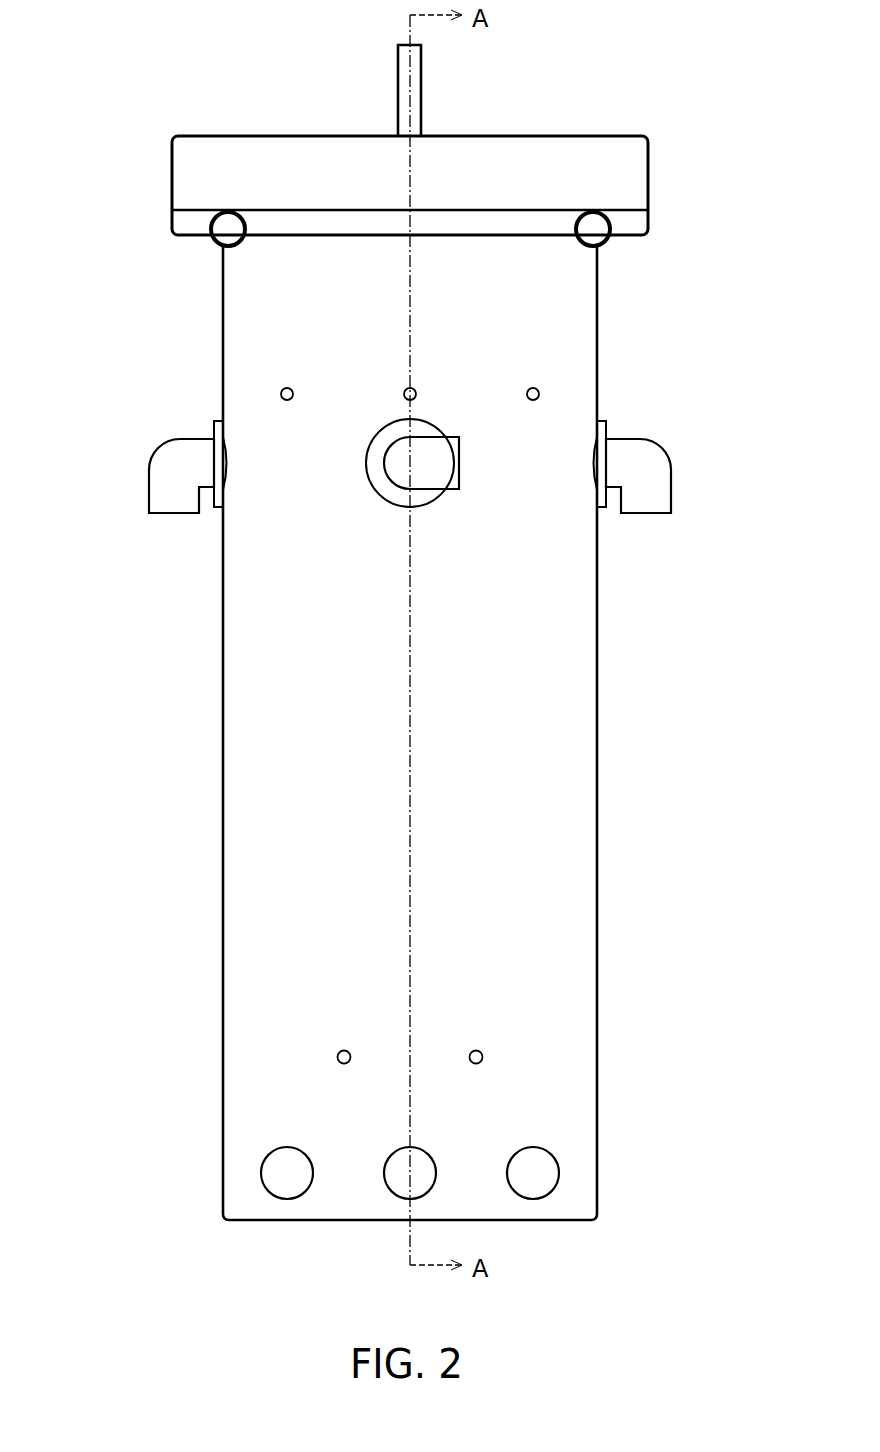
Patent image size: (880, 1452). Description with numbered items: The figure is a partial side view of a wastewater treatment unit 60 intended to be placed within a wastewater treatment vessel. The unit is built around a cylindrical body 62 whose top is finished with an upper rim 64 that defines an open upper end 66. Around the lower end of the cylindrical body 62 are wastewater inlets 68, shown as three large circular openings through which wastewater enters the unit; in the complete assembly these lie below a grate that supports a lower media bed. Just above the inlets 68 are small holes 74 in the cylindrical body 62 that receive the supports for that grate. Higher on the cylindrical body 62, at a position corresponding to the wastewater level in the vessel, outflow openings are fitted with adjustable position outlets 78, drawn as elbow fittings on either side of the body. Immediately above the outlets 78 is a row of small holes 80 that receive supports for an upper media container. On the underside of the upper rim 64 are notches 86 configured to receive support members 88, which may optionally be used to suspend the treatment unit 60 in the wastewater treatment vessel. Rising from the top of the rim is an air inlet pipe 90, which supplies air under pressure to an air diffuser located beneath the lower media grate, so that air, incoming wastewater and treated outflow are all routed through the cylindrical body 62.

The wastewater treatment unit 60 is at (143, 726).
The cylindrical body 62 is at (240, 841).
The upper rim 64 is at (170, 171).
The open upper end 66 is at (261, 112).
The wastewater inlets 68 is at (387, 1190).
The small holes 74 is at (486, 1056).
The adjustable position outlets 78 is at (674, 502).
The small holes 80 is at (541, 393).
The notches 86 is at (417, 260).
The support members 88 is at (212, 243).
The air inlet pipe 90 is at (420, 95).